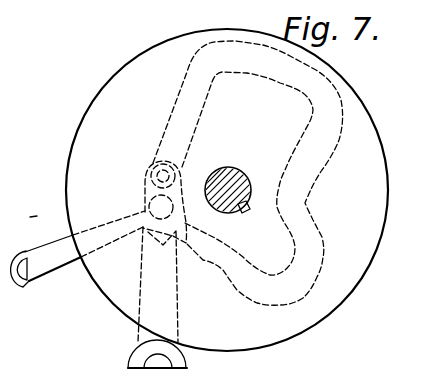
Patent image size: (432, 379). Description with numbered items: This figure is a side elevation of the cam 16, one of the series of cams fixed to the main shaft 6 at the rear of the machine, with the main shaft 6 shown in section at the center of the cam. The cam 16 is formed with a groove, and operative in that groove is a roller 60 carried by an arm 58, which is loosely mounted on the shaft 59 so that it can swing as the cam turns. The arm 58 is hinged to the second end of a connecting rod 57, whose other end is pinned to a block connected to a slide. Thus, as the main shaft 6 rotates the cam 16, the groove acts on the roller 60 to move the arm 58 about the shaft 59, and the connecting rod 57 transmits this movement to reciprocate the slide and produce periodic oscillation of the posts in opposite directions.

The cam 16 is at (120, 70).
The main shaft 6 is at (237, 166).
The roller 60 is at (168, 155).
The connecting rod 57 is at (62, 250).
The arm 58 is at (178, 291).
The shaft 59 is at (163, 360).